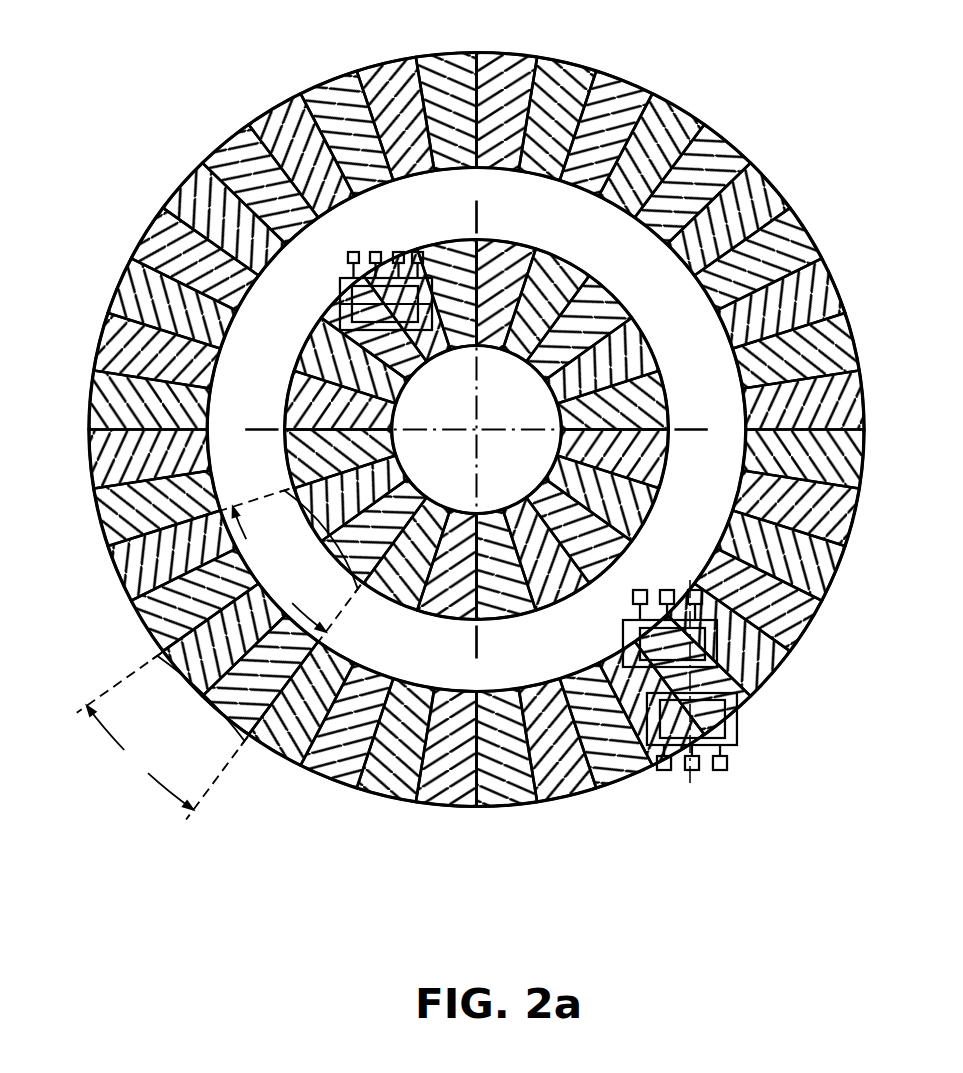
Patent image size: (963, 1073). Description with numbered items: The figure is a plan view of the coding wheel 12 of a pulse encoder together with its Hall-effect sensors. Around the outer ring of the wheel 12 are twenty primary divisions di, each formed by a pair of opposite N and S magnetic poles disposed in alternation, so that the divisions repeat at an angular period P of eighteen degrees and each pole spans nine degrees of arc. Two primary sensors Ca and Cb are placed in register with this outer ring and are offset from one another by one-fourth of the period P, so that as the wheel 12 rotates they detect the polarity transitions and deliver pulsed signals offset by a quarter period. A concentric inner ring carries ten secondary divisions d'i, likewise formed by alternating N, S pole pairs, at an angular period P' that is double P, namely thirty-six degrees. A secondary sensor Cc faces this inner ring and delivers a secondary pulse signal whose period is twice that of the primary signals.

The coding wheel 12 is at (476, 429).
The primary sensor Ca is at (626, 681).
The primary sensor Cb is at (732, 737).
The secondary sensor Cc is at (348, 291).
The angular period of the primary divisions P is at (162, 736).
The angular period of the secondary divisions P' is at (291, 565).
The primary divisions di is at (200, 699).
The secondary divisions d'i is at (330, 541).